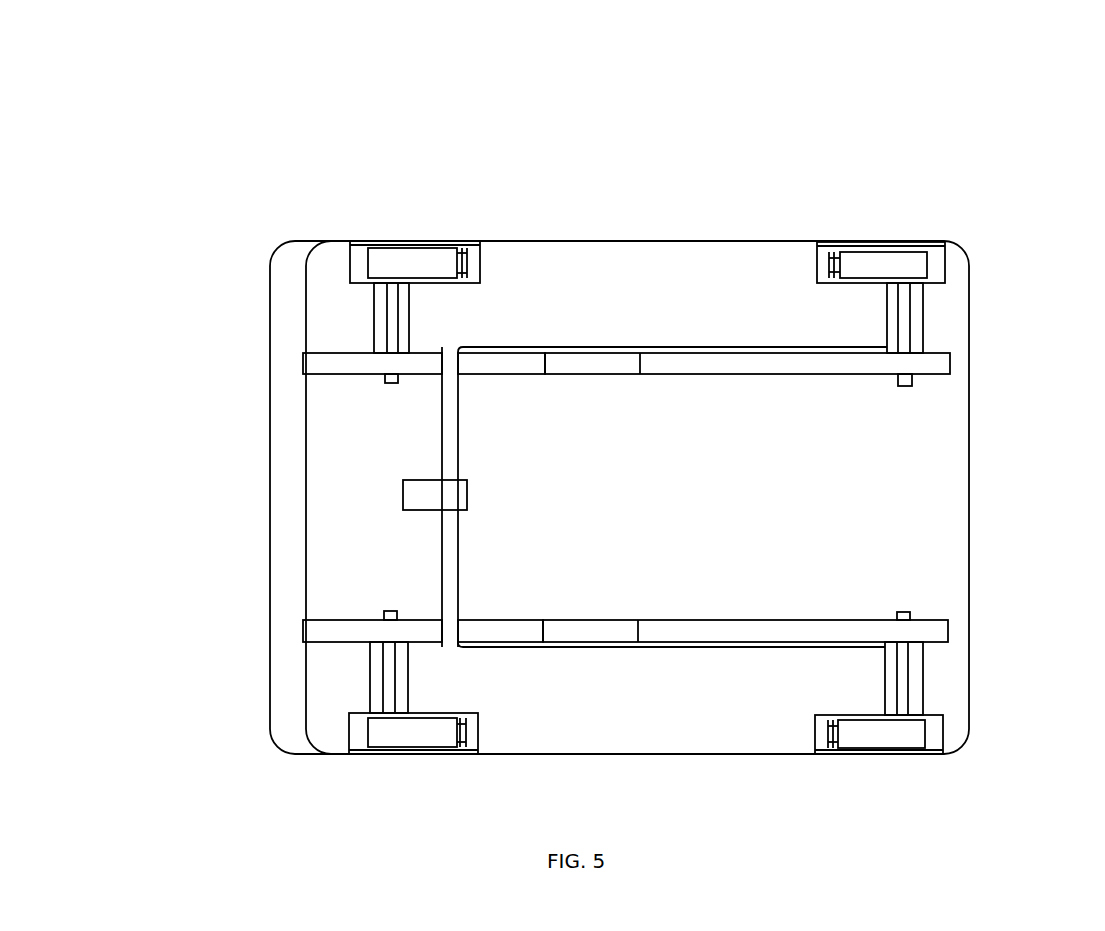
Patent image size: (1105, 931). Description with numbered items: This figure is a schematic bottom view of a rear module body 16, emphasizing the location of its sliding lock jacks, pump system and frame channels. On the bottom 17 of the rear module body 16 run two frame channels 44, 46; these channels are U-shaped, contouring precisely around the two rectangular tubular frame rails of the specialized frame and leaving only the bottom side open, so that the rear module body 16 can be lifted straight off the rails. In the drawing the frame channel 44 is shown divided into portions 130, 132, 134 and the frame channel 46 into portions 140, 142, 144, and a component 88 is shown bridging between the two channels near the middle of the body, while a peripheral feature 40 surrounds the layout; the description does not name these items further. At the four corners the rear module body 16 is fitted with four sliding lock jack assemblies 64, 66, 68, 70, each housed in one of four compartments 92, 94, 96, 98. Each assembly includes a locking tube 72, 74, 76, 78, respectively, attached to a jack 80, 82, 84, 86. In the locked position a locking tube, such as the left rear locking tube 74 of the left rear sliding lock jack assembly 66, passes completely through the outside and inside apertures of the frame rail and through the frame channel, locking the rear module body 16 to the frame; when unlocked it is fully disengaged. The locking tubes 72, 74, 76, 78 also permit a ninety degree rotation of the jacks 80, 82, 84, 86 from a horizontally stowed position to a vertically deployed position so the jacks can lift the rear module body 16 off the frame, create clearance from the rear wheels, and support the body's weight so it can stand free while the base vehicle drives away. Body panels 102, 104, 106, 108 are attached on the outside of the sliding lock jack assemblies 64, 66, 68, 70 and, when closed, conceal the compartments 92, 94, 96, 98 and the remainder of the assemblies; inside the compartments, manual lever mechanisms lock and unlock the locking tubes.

The rear module body 16 is at (218, 145).
The bottom 17 is at (682, 500).
The base 40 is at (287, 480).
The frame channel 44 is at (626, 392).
The frame channel 46 is at (625, 605).
The sliding lock jack assembly 64 is at (480, 189).
The sliding lock jack assembly 66 is at (945, 193).
The sliding lock jack assembly 68 is at (478, 808).
The sliding lock jack assembly 70 is at (943, 808).
The locking tube 72 is at (383, 312).
The locking tube 74 is at (913, 313).
The locking tube 76 is at (383, 682).
The locking tube 78 is at (910, 685).
The jack 80 is at (398, 257).
The jack 82 is at (897, 260).
The jack 84 is at (397, 737).
The jack 86 is at (895, 740).
The center coupling block 88 is at (467, 492).
The compartment 92 is at (357, 262).
The compartment 94 is at (938, 265).
The compartment 96 is at (357, 732).
The compartment 98 is at (935, 735).
The body panel 102 is at (433, 240).
The body panel 104 is at (860, 245).
The body panel 106 is at (428, 752).
The body panel 108 is at (858, 757).
The first segment of front cross member 130 is at (353, 365).
The second segment of front cross member 132 is at (585, 365).
The third segment of front cross member 134 is at (795, 365).
The first segment of rear cross member 140 is at (353, 630).
The second segment of rear cross member 142 is at (583, 630).
The third segment of rear cross member 144 is at (793, 632).